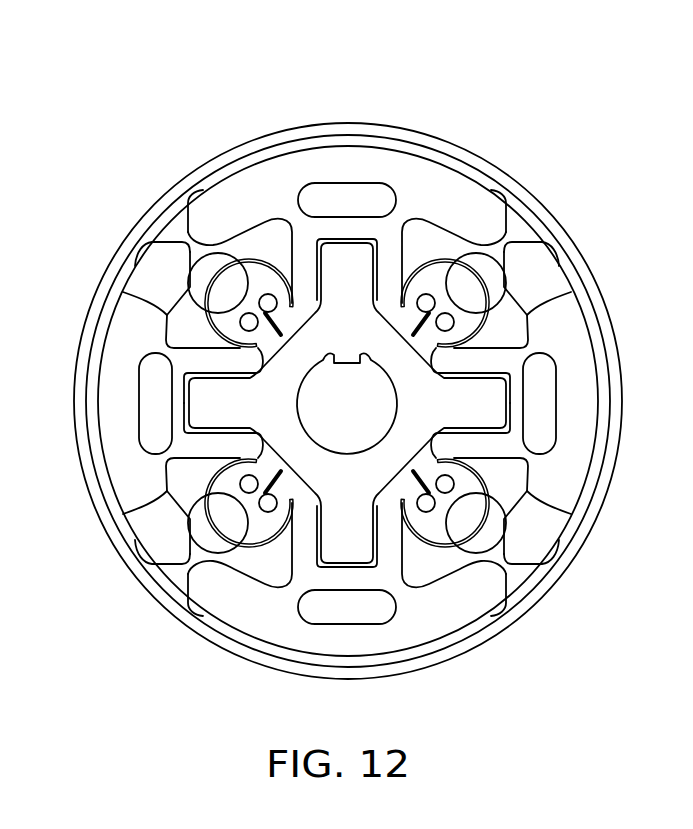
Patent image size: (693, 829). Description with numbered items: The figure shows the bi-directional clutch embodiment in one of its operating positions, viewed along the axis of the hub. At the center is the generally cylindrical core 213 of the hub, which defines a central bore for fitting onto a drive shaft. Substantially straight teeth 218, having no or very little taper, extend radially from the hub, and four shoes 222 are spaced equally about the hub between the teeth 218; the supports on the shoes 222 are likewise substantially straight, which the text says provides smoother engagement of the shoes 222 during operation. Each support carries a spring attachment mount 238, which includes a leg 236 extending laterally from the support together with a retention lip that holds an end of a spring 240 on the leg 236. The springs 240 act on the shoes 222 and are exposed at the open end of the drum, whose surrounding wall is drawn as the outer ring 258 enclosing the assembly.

The core 213 is at (410, 437).
The teeth 218 is at (345, 273).
The shoes 222 is at (241, 604).
The leg 236 is at (402, 310).
The spring attachment mount 238 is at (270, 303).
The spring 240 is at (438, 460).
The outer ring 258 is at (148, 597).